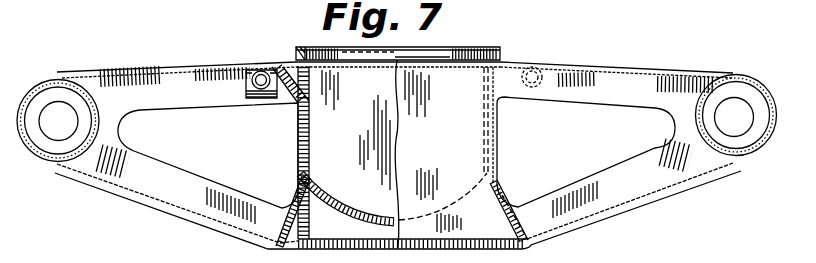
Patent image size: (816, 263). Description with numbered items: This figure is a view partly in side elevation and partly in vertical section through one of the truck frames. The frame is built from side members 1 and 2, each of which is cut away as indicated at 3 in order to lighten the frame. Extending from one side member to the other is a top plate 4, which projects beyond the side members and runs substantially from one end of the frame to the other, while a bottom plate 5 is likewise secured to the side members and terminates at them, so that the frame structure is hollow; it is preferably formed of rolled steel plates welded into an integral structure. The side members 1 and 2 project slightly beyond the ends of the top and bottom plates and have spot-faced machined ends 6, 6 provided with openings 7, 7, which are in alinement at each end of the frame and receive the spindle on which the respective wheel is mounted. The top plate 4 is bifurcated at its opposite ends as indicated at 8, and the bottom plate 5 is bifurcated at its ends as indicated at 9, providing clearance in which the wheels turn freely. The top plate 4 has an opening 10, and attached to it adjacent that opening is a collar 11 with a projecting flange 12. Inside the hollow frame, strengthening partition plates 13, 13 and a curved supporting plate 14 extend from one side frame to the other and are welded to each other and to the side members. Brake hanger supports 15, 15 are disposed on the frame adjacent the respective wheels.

The side member 1 is at (640, 180).
The side member 2 is at (160, 182).
The cut-away portion 3 is at (185, 105).
The top plate 4 is at (598, 67).
The bottom plate 5 is at (256, 242).
The spot-faced machined end 6 is at (40, 142).
The opening 7 is at (47, 107).
The bifurcation of top plate 8 is at (205, 68).
The bifurcation of bottom plate 9 is at (195, 216).
The opening 10 is at (338, 66).
The collar 11 is at (297, 58).
The projecting flange 12 is at (503, 54).
The strengthening partition plate 13 is at (310, 117).
The curved supporting plate 14 is at (355, 200).
The brake hanger support 15 is at (264, 93).